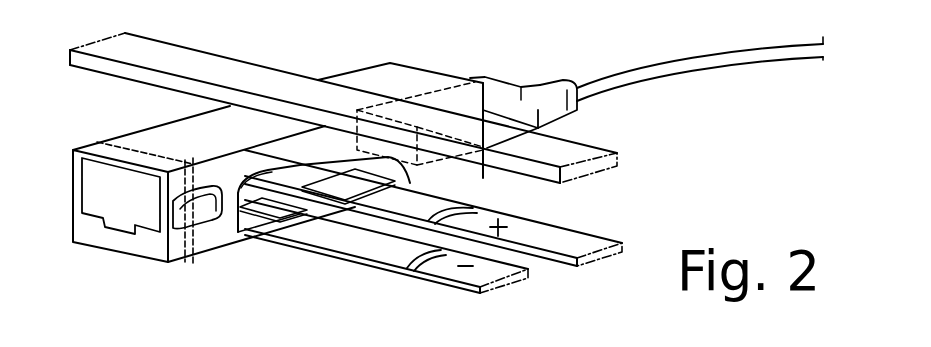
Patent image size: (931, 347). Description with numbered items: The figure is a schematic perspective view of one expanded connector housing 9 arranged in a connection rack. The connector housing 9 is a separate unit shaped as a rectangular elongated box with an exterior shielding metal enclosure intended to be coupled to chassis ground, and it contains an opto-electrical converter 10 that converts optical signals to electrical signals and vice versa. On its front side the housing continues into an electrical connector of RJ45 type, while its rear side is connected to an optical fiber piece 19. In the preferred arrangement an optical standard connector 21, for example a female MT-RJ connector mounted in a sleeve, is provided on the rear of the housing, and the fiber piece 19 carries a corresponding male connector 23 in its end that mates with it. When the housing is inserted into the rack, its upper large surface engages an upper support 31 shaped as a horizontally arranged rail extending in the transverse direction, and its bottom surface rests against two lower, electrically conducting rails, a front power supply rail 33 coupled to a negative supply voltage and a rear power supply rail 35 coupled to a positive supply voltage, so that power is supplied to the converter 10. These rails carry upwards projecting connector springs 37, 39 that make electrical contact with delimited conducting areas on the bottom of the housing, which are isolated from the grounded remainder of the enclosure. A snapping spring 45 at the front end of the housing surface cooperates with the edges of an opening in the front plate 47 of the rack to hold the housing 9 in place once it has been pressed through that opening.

The connector housing 9 is at (362, 75).
The opto-electrical converter 10 is at (262, 213).
The optical fiber piece 19 is at (733, 55).
The optical standard connector 21 is at (547, 83).
The connector 23 is at (500, 88).
The upper support 31 is at (230, 62).
The front power supply rail 33 is at (343, 255).
The rear power supply rail 35 is at (566, 234).
The connector spring 37 is at (410, 265).
The connector spring 39 is at (467, 203).
The snapping spring 45 is at (205, 223).
The front plate 47 is at (96, 143).